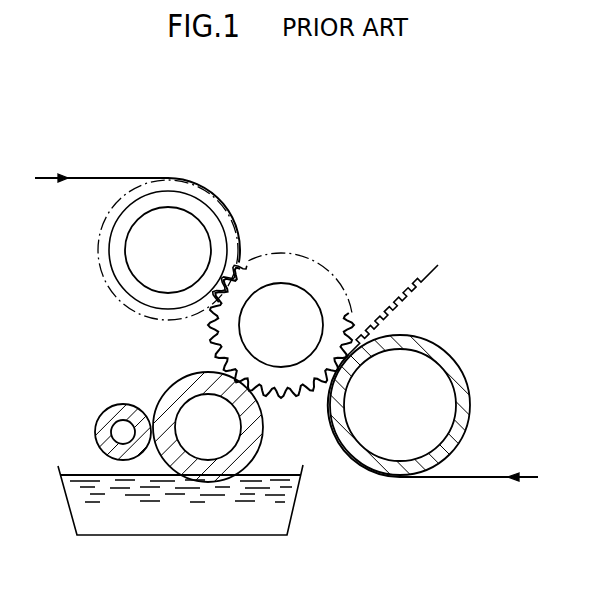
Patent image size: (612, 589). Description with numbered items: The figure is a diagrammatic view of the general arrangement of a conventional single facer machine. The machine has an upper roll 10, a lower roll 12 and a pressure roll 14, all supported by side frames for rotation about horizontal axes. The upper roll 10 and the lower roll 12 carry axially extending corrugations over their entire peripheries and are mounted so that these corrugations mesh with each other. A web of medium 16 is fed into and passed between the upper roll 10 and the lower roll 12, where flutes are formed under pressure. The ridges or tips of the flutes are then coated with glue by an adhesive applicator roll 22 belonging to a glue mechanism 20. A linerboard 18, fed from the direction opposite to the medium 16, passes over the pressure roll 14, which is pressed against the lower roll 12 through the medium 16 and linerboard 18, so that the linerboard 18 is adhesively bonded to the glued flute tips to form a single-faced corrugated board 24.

The upper roll 10 is at (127, 263).
The lower roll 12 is at (285, 282).
The pressure roll 14 is at (457, 371).
The web of medium 16 is at (95, 177).
The linerboard 18 is at (467, 477).
The glue mechanism 20 is at (88, 407).
The adhesive applicator roll 22 is at (177, 383).
The single-faced corrugated board 24 is at (412, 283).